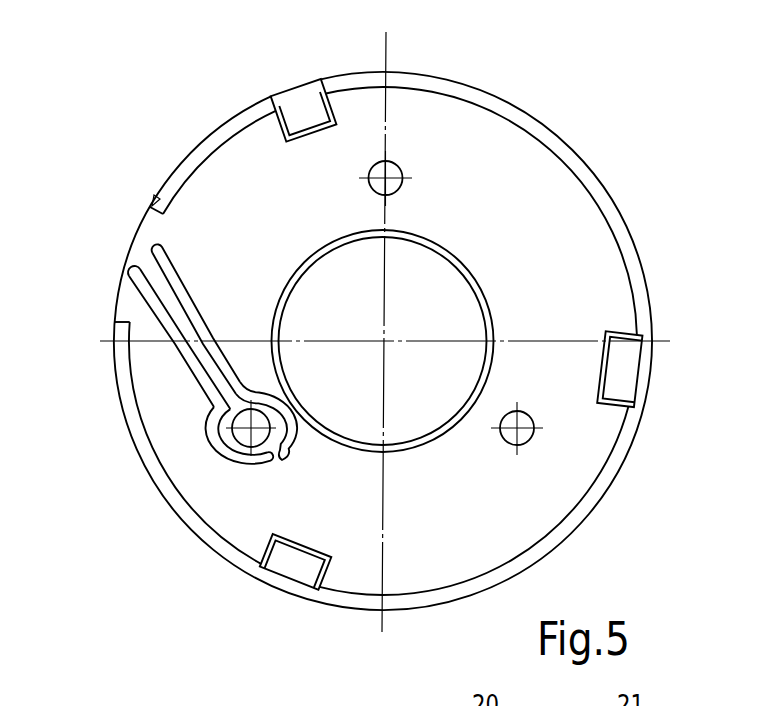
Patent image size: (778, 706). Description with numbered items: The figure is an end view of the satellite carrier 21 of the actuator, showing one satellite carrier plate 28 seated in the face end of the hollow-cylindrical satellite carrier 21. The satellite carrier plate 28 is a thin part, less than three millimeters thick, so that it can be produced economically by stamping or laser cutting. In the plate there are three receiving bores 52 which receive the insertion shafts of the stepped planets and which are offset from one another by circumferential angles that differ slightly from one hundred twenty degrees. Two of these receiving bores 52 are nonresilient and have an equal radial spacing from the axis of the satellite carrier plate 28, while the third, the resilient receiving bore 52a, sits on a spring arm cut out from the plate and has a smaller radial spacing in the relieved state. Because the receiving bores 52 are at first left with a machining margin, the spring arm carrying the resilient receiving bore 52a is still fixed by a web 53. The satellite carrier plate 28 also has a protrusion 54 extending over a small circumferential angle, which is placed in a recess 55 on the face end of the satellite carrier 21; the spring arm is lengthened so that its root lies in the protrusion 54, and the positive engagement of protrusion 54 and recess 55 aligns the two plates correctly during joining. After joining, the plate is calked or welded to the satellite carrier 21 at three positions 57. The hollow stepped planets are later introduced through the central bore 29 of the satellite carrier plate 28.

The satellite carrier 21 is at (568, 142).
The satellite carrier plate 28 is at (517, 225).
The central bore 29 is at (463, 325).
The receiving bore 52 is at (397, 167).
The resilient receiving bore 52a is at (244, 437).
The web 53 is at (282, 462).
The protrusion 54 is at (135, 300).
The recess 55 is at (157, 190).
The joining positions 57 is at (300, 113).